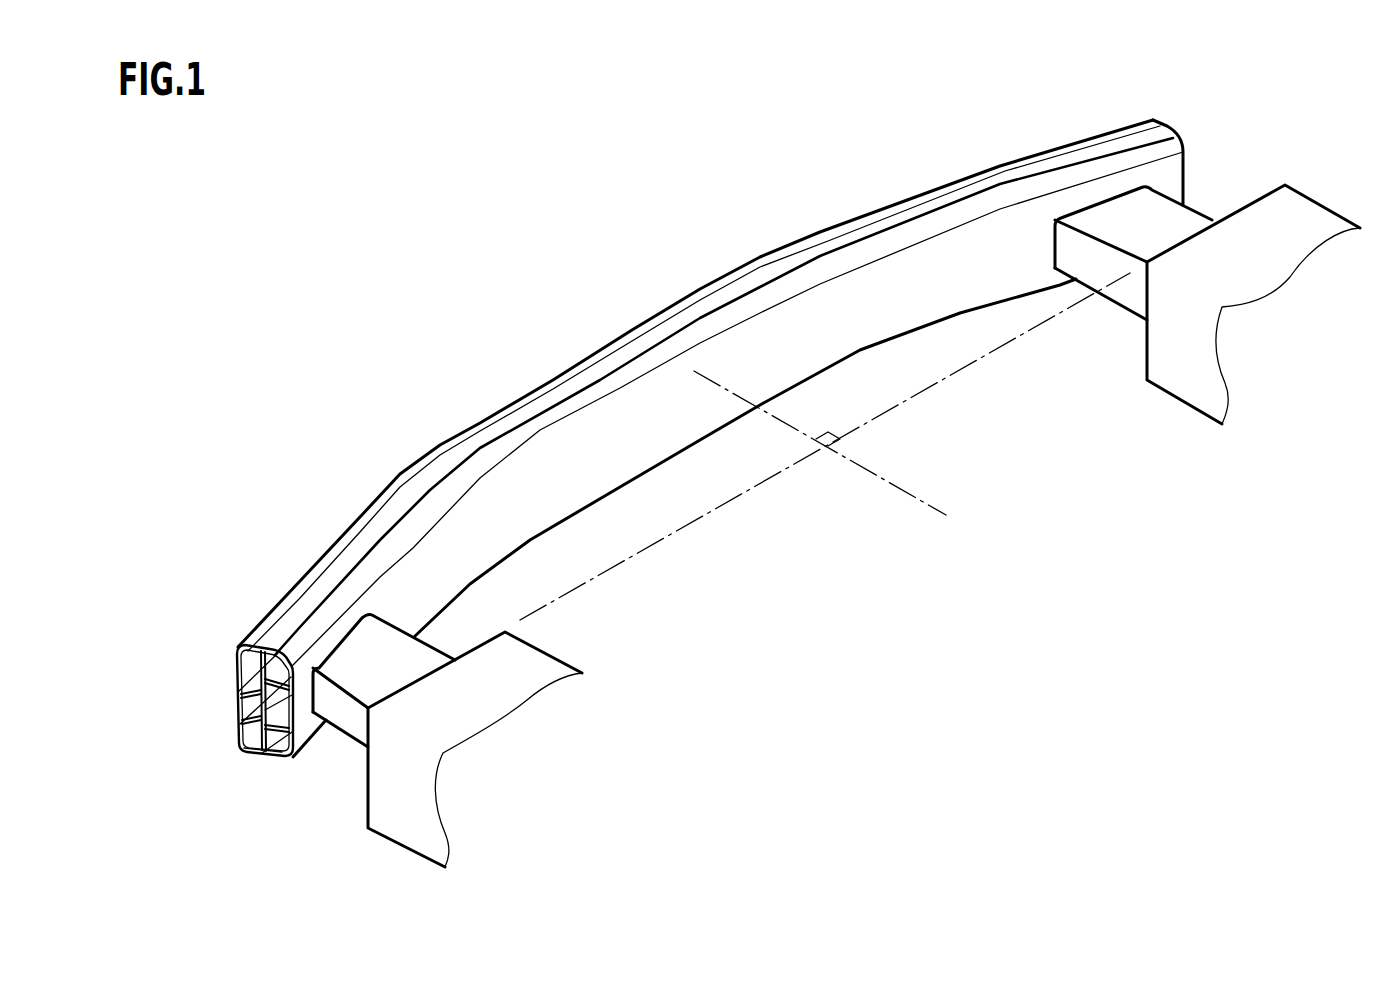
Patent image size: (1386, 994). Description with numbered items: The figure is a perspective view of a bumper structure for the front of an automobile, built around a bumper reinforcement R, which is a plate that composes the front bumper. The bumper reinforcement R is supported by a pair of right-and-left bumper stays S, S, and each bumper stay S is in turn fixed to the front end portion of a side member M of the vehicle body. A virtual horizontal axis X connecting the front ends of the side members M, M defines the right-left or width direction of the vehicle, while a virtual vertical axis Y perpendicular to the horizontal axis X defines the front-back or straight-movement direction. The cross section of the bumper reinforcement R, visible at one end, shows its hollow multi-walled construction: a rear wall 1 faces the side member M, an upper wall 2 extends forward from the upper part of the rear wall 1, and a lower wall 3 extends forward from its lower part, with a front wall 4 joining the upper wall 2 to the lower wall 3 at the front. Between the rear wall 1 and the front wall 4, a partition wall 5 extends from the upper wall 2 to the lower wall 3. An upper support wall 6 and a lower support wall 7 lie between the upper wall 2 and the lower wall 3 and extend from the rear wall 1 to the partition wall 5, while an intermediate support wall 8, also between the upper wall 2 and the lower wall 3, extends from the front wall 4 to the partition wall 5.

The rear wall 1 is at (301, 733).
The upper wall 2 is at (280, 632).
The lower wall 3 is at (258, 743).
The front wall 4 is at (238, 703).
The partition wall 5 is at (243, 726).
The upper support wall 6 is at (240, 651).
The lower support wall 7 is at (282, 722).
The intermediate support wall 8 is at (250, 697).
The bumper reinforcement R is at (688, 469).
The bumper stay S is at (348, 740).
The side member M is at (564, 660).
The horizontal axis X is at (726, 506).
The vertical axis Y is at (920, 502).